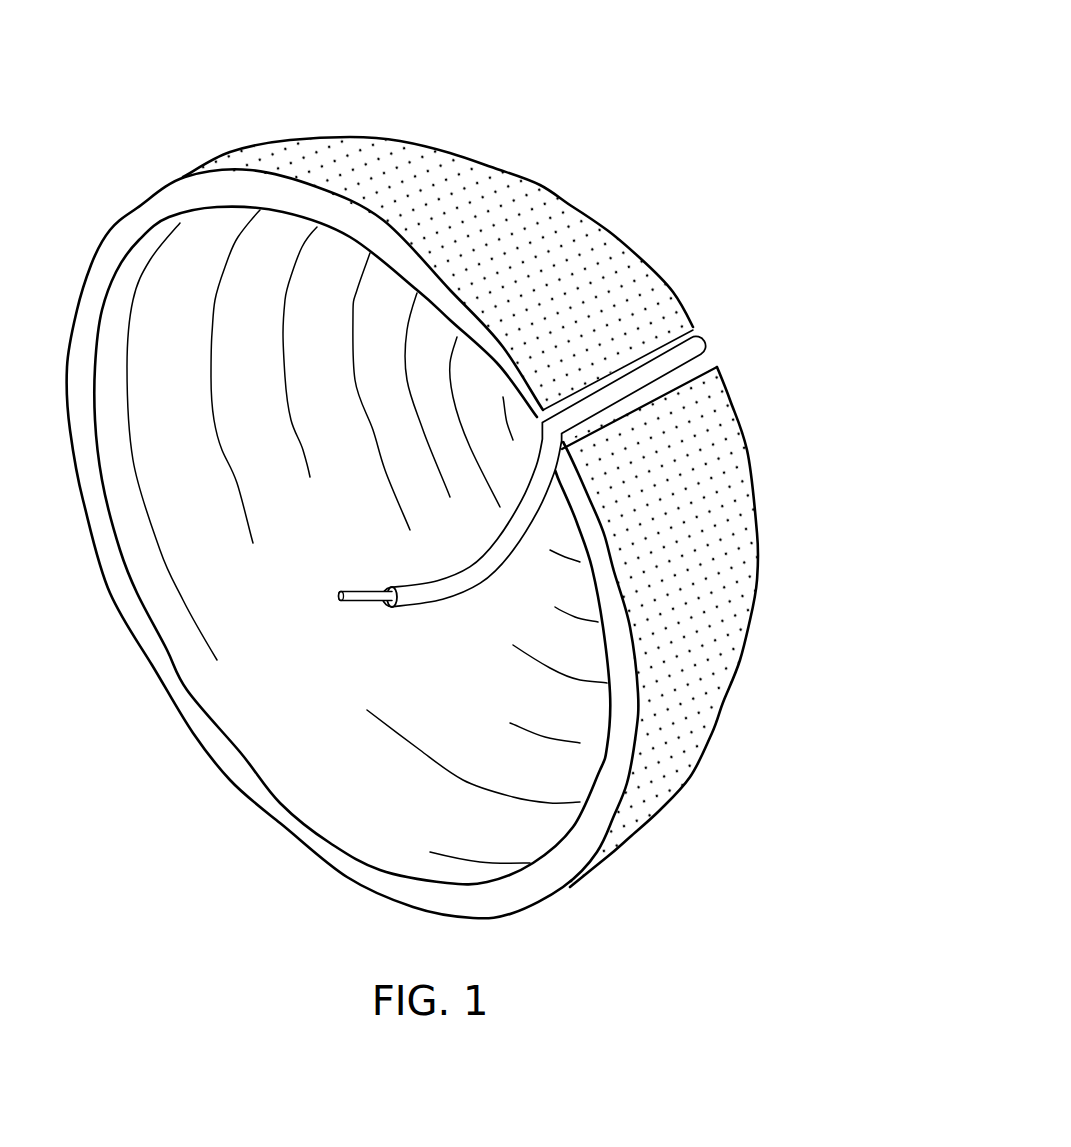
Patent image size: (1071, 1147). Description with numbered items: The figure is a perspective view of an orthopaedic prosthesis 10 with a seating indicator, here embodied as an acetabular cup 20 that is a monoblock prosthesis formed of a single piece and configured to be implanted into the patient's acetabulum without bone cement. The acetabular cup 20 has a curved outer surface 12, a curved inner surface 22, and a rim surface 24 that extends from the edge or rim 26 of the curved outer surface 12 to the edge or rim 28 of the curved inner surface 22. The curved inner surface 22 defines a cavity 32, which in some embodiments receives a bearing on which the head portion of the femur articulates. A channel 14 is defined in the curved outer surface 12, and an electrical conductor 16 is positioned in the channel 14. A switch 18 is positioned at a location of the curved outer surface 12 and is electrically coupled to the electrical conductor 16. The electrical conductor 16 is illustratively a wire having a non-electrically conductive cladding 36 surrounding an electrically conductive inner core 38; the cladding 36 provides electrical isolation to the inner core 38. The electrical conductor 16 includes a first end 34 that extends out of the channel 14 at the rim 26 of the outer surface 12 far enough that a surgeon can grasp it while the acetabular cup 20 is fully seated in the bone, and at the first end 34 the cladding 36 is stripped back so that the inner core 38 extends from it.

The orthopaedic prosthesis 10 is at (422, 460).
The curved outer surface 12 is at (422, 506).
The channel 14 is at (710, 361).
The electrical conductor 16 is at (497, 563).
The switch 18 is at (707, 332).
The acetabular cup 20 is at (265, 148).
The curved inner surface 22 is at (203, 697).
The rim surface 24 is at (445, 300).
The rim of the curved outer surface 26 is at (121, 214).
The rim of the curved inner surface 28 is at (137, 593).
The cavity 32 is at (300, 767).
The first end 34 is at (352, 581).
The cladding 36 is at (418, 606).
The inner core 38 is at (347, 598).